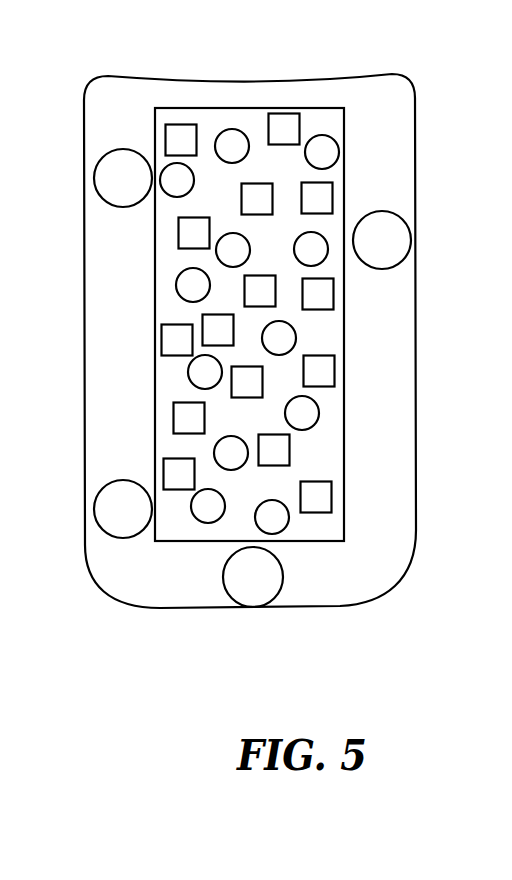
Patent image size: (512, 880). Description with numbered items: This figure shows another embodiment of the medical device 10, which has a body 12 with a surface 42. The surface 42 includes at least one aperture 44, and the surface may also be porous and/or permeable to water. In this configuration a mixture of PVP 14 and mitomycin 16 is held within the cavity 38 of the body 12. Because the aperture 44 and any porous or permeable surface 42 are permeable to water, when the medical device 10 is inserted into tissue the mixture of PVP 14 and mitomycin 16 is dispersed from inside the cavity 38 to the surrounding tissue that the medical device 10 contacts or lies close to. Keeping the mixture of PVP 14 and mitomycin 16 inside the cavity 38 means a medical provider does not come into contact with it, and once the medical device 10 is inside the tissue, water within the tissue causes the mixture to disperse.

The medical device 10 is at (437, 136).
The body 12 is at (362, 602).
The PVP 14 is at (193, 279).
The mitomycin 16 is at (175, 335).
The cavity 38 is at (327, 532).
The surface 42 is at (147, 593).
The aperture 44 is at (254, 624).